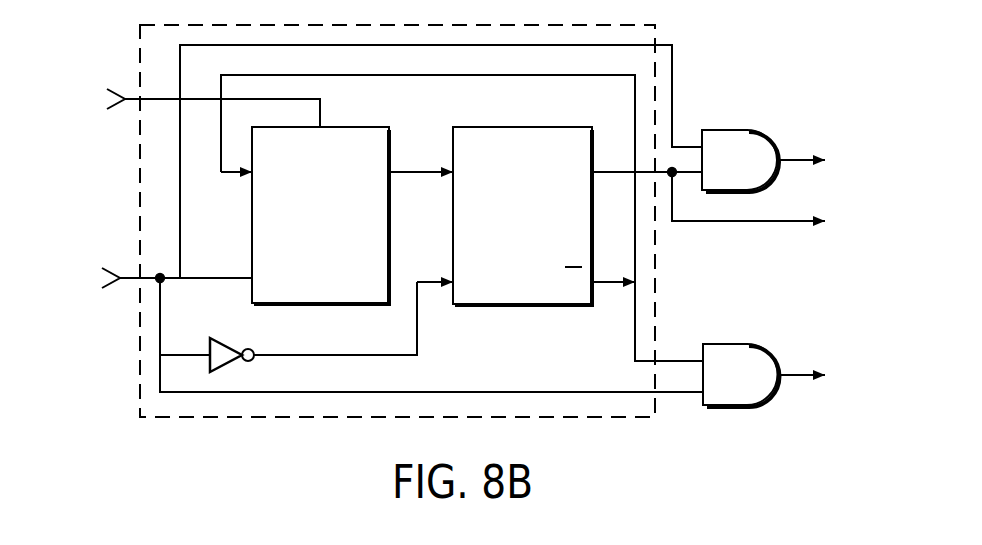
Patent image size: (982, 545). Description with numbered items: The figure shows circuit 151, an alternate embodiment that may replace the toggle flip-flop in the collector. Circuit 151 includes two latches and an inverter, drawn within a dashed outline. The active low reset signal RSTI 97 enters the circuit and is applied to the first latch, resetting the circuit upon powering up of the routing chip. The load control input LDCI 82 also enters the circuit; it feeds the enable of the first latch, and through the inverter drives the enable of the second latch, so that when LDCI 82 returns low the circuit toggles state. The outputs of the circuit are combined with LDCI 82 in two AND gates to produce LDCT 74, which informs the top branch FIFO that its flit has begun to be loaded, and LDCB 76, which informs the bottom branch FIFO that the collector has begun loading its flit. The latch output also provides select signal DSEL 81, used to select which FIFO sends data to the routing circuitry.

The reset signal RSTI 97 is at (187, 104).
The LDCI 82 is at (148, 286).
The LDCT 74 is at (794, 161).
The select signal DSEL 81 is at (780, 213).
The LDCB 76 is at (794, 375).
The circuit 151 is at (267, 418).